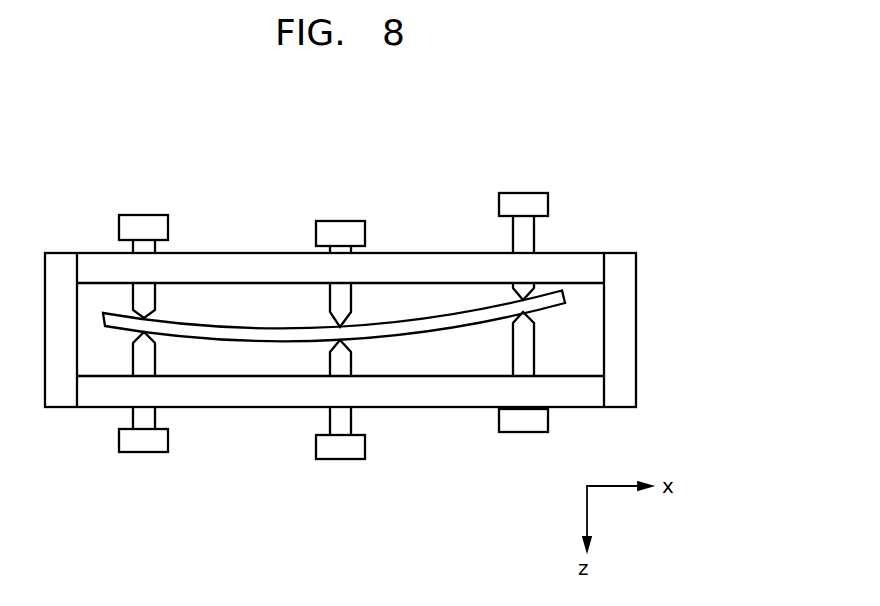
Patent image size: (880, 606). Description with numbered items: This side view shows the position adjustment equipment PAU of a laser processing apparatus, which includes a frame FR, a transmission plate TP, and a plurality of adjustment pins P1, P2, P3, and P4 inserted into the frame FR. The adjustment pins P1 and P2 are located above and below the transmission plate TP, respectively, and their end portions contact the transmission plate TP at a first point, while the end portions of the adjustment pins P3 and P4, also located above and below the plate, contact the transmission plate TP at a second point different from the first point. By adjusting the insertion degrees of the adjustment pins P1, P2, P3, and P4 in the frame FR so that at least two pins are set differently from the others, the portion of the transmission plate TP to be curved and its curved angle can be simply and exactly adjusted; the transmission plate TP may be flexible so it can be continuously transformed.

The position adjustment equipment PAU is at (569, 172).
The frame FR is at (435, 257).
The transmission plate TP is at (567, 300).
The adjustment pin P1 is at (532, 350).
The adjustment pin P2 is at (530, 233).
The adjustment pin P3 is at (332, 420).
The adjustment pin P4 is at (333, 300).